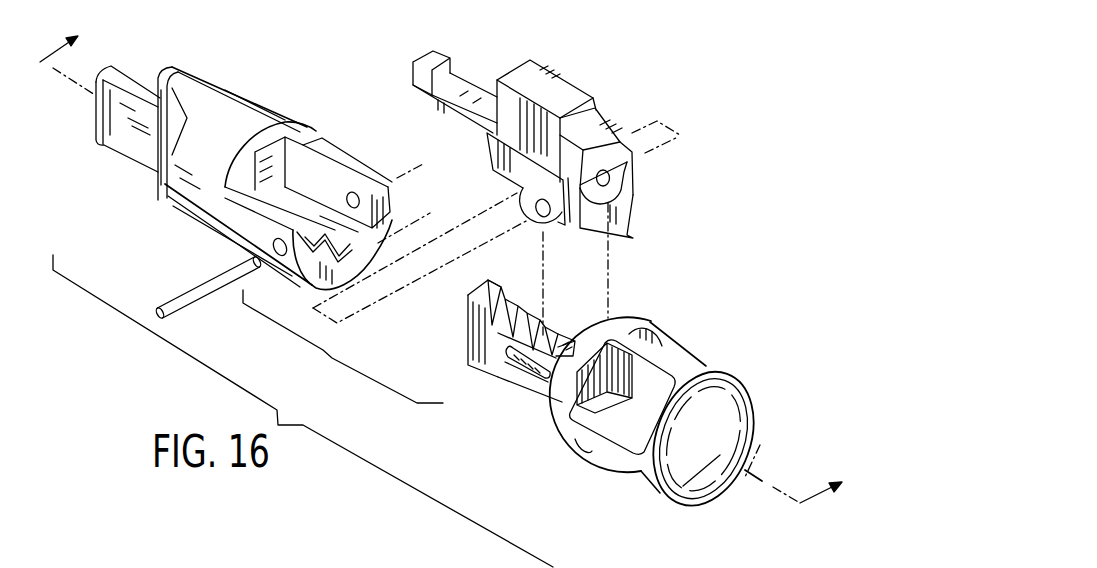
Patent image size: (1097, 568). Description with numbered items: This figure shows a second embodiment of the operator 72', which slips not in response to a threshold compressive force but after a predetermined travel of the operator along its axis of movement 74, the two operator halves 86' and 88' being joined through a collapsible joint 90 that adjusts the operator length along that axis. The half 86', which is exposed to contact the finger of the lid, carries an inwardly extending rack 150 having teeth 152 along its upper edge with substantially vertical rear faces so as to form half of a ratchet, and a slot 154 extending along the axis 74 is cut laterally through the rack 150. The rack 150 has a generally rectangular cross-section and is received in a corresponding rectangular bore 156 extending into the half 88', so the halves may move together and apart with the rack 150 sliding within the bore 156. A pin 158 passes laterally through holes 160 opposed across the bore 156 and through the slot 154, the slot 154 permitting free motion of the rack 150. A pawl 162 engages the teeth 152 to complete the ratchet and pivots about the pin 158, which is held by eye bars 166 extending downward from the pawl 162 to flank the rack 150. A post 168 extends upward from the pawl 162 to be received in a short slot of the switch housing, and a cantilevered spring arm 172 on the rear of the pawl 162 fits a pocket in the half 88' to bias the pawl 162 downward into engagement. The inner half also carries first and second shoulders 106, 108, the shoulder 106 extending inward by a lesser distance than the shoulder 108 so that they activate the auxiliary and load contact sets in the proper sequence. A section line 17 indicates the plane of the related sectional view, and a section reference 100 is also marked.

The section line 17- 17 is at (441, 269).
The operator 72' is at (647, 382).
The axis of movement 74 is at (762, 445).
The operator half 86' is at (703, 455).
The operator half 88' is at (239, 71).
The collapsible joint 90 is at (343, 346).
The housing base 100 is at (303, 411).
The first shoulder 106 is at (162, 140).
The second shoulder 108 is at (98, 122).
The rack 150 is at (543, 398).
The teeth 152 is at (496, 372).
The slot 154 is at (532, 373).
The rectangular bore 156 is at (306, 104).
The pin 158 is at (193, 288).
The holes 160 is at (262, 246).
The pawl 162 is at (553, 128).
The eye bars 166 is at (633, 237).
The post 168 is at (558, 83).
The cantilevered spring arm 172 is at (465, 90).